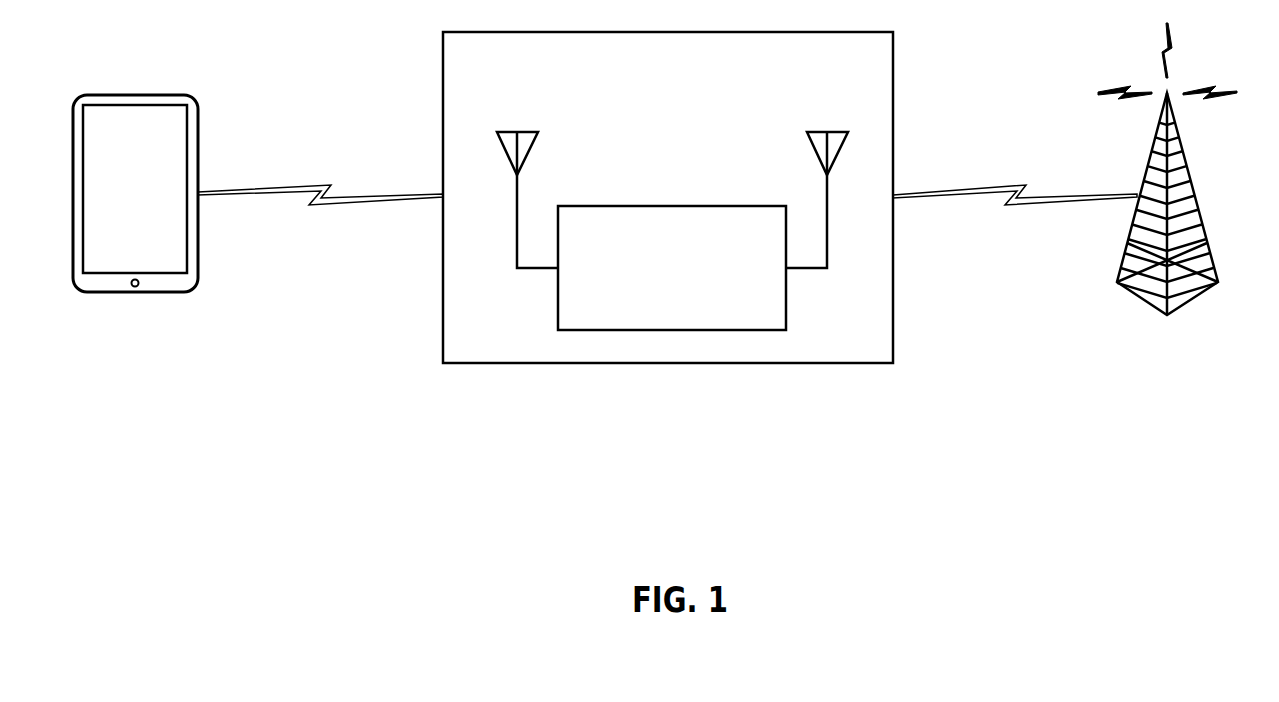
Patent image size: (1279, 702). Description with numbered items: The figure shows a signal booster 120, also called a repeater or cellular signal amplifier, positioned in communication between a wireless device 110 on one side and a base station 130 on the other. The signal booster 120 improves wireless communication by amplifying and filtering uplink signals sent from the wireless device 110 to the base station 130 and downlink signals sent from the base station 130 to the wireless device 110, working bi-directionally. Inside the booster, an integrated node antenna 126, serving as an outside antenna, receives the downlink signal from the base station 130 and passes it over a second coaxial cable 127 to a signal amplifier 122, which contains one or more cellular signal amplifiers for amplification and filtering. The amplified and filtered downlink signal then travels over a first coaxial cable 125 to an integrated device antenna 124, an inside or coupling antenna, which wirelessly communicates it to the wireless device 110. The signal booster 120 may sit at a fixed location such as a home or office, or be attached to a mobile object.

The wireless device 110 is at (130, 95).
The signal booster 120 is at (784, 70).
The signal amplifier 122 is at (692, 293).
The integrated device antenna 124 is at (517, 140).
The first coaxial cable 125 is at (508, 221).
The integrated node antenna 126 is at (827, 140).
The second coaxial cable 127 is at (831, 221).
The base station 130 is at (1190, 152).